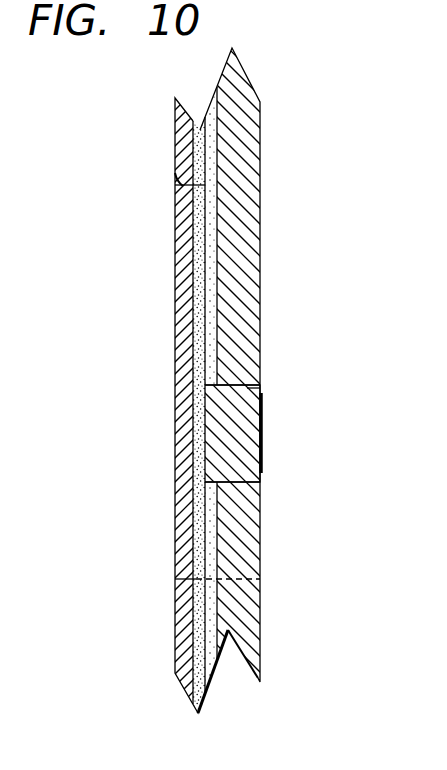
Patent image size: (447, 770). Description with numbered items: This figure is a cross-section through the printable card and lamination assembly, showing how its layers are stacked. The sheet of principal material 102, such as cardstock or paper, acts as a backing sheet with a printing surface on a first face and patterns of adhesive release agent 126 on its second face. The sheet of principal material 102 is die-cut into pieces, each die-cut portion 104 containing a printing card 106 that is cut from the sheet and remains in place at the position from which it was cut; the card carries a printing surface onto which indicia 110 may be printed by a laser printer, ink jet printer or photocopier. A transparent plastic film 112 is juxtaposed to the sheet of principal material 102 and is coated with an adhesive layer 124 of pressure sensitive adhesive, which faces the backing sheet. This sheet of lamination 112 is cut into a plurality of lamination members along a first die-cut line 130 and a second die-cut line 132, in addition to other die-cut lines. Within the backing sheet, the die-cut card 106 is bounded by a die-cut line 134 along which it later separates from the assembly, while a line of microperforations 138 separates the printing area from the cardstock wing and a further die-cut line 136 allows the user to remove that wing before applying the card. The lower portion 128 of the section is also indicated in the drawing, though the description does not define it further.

The sheet of principal material 102 is at (262, 179).
The die-cut portion 104 is at (232, 384).
The printing card 106 is at (222, 439).
The indicia 110 is at (263, 418).
The transparent plastic film 112 is at (175, 127).
The adhesive layer 124 is at (212, 642).
The adhesive release agent 126 is at (210, 622).
The lower portion of first sheet 128 is at (247, 553).
The first die-cut line 130 is at (175, 173).
The second die-cut line 132 is at (178, 579).
The die-cut line 134 is at (248, 389).
The die-cut line 136 is at (260, 482).
The line of microperforations 138 is at (252, 579).